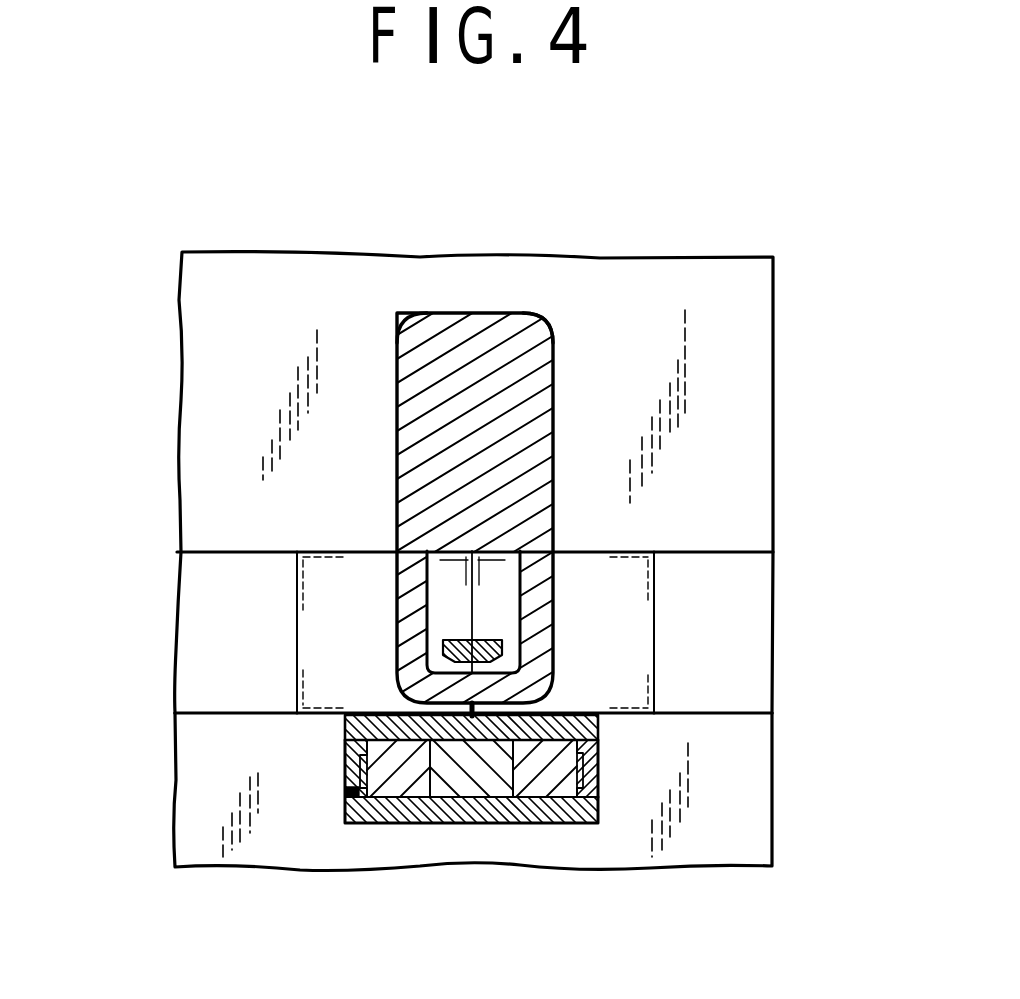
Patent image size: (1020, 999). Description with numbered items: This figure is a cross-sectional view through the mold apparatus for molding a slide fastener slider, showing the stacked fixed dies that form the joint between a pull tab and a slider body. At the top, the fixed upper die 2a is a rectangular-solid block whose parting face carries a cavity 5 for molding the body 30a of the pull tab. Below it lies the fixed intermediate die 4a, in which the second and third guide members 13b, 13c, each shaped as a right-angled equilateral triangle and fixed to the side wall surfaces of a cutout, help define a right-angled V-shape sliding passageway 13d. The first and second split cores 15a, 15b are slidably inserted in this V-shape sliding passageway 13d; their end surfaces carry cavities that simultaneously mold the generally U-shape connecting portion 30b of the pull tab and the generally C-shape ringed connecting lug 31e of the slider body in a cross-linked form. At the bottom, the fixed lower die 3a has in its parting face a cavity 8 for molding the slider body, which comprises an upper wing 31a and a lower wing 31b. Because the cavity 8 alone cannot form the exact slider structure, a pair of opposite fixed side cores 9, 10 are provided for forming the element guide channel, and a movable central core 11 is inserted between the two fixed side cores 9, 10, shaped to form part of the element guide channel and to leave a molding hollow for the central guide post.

The fixed upper die 2a is at (742, 360).
The fixed lower die 3a is at (702, 834).
The fixed intermediate die 4a is at (777, 566).
The cavity 5 is at (553, 392).
The body of pull tab 30a is at (485, 330).
The connecting portion of pull tab 30b is at (393, 622).
The ringed connecting lug 31e is at (500, 650).
The second guide member 13b is at (200, 607).
The third guide member 13c is at (733, 623).
The V-shape sliding passageway 13d is at (296, 618).
The first split core 15a is at (327, 572).
The second split core 15b is at (608, 573).
The upper wing 31a is at (347, 726).
The lower wing 31b is at (348, 823).
The cavity 8 is at (583, 800).
The fixed side core 9 is at (400, 775).
The fixed side core 10 is at (558, 778).
The movable central core 11 is at (487, 773).